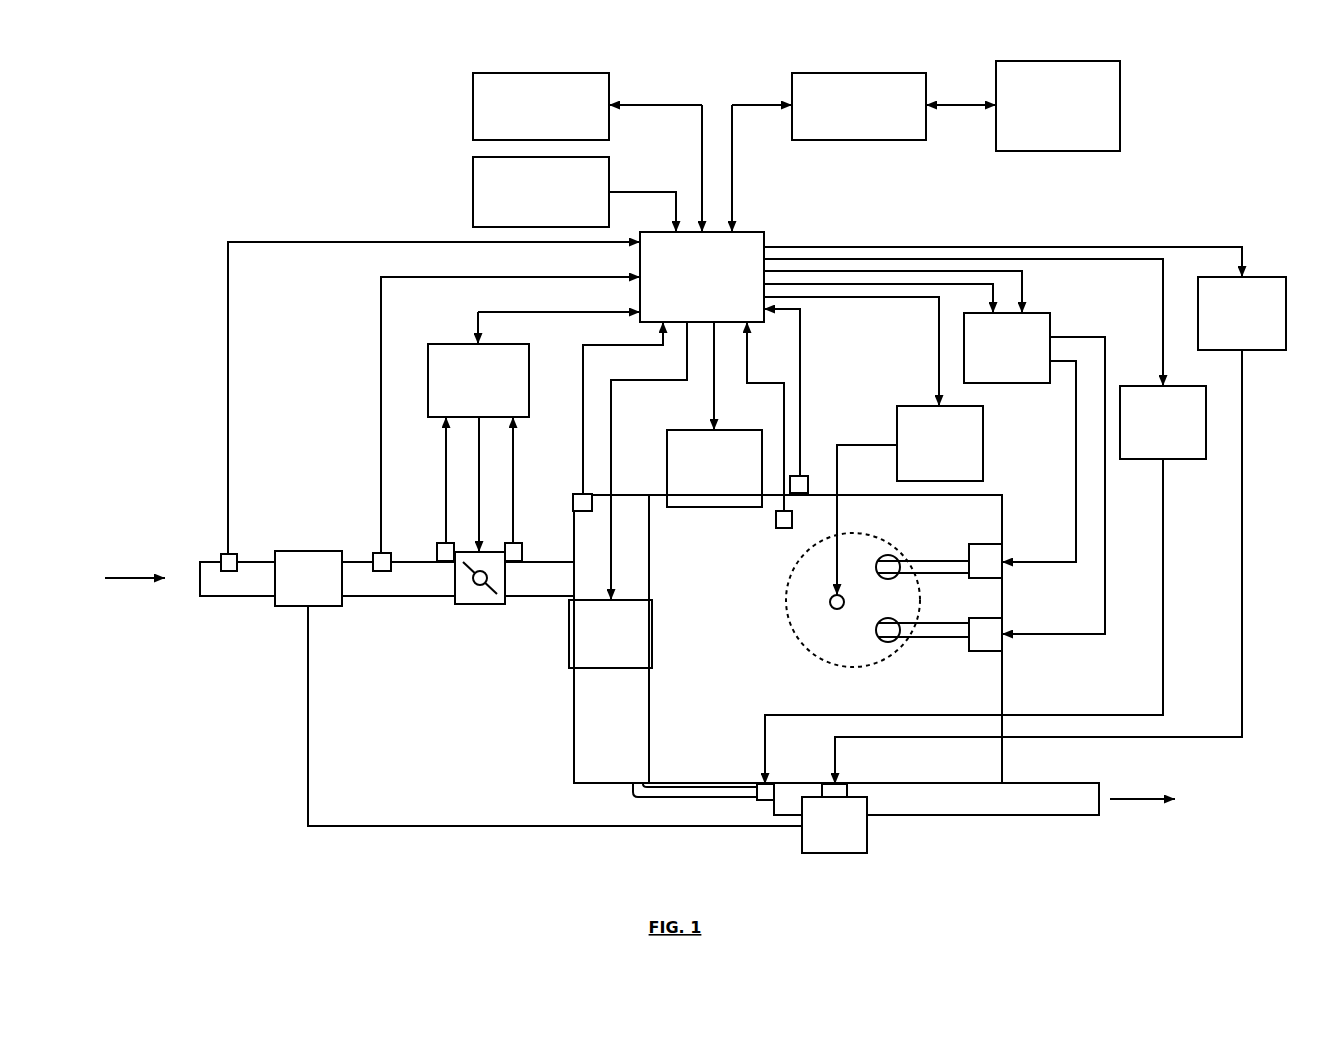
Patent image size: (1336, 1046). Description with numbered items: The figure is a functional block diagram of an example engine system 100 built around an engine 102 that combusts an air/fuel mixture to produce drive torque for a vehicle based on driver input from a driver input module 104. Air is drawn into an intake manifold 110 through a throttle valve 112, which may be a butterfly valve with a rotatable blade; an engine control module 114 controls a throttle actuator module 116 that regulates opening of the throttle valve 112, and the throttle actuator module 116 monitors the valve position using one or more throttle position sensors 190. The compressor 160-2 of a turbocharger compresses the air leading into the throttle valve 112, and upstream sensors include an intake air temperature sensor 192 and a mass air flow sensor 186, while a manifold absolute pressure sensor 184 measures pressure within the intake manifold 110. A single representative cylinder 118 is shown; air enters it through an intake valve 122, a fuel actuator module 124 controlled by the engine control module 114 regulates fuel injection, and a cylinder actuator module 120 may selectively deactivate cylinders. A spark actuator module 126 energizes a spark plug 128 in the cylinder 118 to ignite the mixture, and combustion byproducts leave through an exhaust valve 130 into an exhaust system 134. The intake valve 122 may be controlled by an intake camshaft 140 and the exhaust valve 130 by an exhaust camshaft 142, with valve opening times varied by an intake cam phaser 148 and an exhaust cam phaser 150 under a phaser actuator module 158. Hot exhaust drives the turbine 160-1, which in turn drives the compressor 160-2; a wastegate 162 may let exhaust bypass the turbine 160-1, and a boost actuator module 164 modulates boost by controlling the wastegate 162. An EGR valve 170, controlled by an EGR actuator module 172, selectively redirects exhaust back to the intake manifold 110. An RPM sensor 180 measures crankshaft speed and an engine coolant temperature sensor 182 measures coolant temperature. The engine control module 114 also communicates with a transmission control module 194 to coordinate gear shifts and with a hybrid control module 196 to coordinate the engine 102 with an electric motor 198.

The engine system 100 is at (172, 130).
The engine 102 is at (1002, 506).
The driver input module 104 is at (473, 192).
The intake manifold 110 is at (574, 718).
The throttle valve 112 is at (477, 604).
The engine control module 114 is at (764, 236).
The throttle actuator module 116 is at (452, 344).
The cylinder 118 is at (814, 662).
The cylinder actuator module 120 is at (724, 430).
The intake valve 122 is at (888, 555).
The fuel actuator module 124 is at (625, 668).
The spark actuator module 126 is at (983, 444).
The spark plug 128 is at (830, 602).
The exhaust valve 130 is at (888, 642).
The exhaust system 134 is at (1072, 816).
The intake camshaft 140 is at (942, 561).
The exhaust camshaft 142 is at (945, 637).
The intake cam phaser 148 is at (985, 544).
The exhaust cam phaser 150 is at (985, 651).
The phaser actuator module 158 is at (1050, 324).
The turbine 160-1 is at (867, 830).
The compressor 160-2 is at (300, 606).
The wastegate 162 is at (847, 790).
The boost actuator module 164 is at (1260, 350).
The EGR valve 170 is at (765, 800).
The EGR actuator module 172 is at (1182, 459).
The RPM sensor 180 is at (804, 476).
The engine coolant temperature sensor 182 is at (784, 528).
The manifold absolute pressure sensor 184 is at (578, 494).
The mass air flow sensor 186 is at (378, 553).
The throttle position sensors 190 is at (445, 562).
The intake air temperature sensor 192 is at (226, 554).
The transmission control module 194 is at (473, 108).
The hybrid control module 196 is at (860, 140).
The electric motor 198 is at (1070, 151).